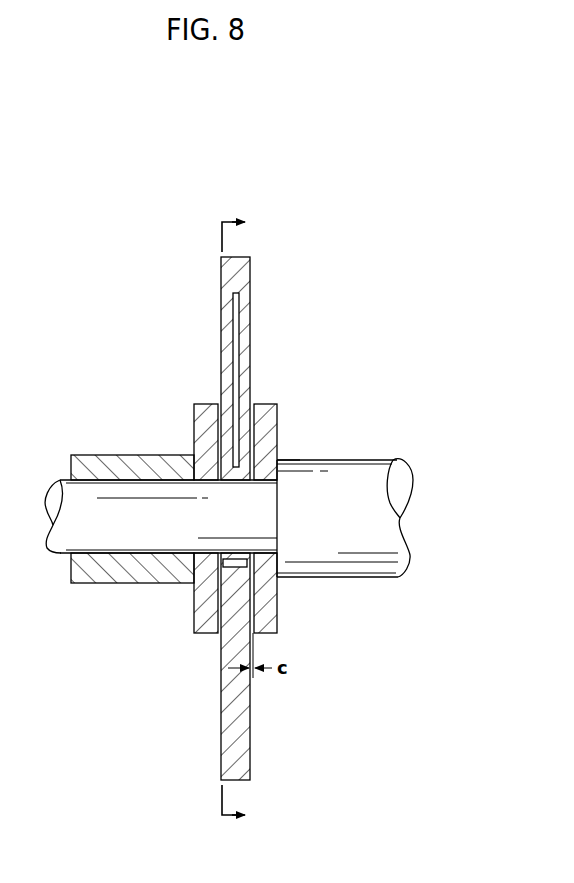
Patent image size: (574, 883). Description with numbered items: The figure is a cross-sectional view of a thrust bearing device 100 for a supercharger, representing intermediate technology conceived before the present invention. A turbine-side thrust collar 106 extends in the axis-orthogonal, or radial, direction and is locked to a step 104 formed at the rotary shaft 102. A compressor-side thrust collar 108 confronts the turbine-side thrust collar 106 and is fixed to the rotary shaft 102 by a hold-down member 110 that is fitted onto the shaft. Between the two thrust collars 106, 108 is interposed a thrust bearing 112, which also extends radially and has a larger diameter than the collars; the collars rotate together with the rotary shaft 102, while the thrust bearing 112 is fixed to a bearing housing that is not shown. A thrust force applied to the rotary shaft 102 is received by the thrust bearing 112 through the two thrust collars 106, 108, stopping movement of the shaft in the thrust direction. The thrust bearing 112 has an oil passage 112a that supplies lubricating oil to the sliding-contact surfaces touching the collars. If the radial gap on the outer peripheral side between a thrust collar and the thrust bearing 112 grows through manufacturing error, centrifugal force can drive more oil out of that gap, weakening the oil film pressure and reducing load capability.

The thrust bearing device 100 is at (306, 243).
The rotary shaft 102 is at (338, 478).
The step 104 is at (278, 467).
The turbine-side thrust collar 106 is at (278, 597).
The compressor-side thrust collar 108 is at (205, 403).
The hold-down member 110 is at (123, 454).
The thrust bearing 112 is at (274, 493).
The oil passage 112a is at (240, 378).